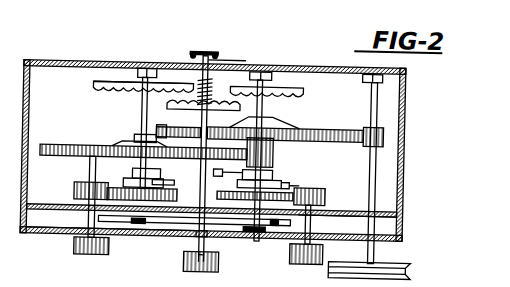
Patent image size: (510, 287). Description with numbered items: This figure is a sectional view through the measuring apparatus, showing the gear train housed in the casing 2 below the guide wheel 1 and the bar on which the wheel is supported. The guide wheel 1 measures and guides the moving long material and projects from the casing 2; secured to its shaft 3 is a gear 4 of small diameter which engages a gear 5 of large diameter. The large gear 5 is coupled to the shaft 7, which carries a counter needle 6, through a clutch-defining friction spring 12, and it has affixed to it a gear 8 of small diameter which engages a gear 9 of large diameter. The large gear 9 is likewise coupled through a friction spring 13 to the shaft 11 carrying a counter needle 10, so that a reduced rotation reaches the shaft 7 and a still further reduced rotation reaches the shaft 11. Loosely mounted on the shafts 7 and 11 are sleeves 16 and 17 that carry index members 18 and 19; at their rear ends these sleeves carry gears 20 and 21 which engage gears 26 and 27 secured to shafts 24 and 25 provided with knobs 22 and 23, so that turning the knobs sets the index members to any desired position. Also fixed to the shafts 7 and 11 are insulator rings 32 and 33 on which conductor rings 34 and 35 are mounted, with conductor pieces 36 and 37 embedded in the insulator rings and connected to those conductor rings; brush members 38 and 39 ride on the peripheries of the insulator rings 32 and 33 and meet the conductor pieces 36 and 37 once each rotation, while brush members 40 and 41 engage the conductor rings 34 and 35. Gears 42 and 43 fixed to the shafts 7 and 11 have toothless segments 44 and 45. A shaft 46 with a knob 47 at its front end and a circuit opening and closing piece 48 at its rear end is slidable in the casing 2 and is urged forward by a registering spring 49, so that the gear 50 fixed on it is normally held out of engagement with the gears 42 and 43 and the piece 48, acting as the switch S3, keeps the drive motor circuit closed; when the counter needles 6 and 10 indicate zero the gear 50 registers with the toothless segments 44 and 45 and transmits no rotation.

The guide wheel 1 is at (413, 267).
The casing 2 is at (404, 232).
The shaft 3 is at (376, 185).
The gear 4 is at (364, 125).
The gear 5 is at (318, 128).
The counter needle 6 is at (306, 236).
The shaft 7 is at (276, 122).
The gear 8 is at (246, 148).
The gear 9 is at (74, 148).
The counter needle 10 is at (200, 240).
The shaft 11 is at (141, 112).
The friction spring 12 is at (297, 95).
The friction spring 13 is at (120, 142).
The sleeve 16 is at (205, 232).
The sleeve 17 is at (180, 208).
The index member 18 is at (277, 213).
The index member 19 is at (136, 226).
The gear 20 is at (220, 213).
The gear 21 is at (122, 213).
The knob 22 is at (306, 262).
The knob 23 is at (77, 250).
The shaft 24 is at (320, 221).
The shaft 25 is at (90, 221).
The gear 26 is at (326, 194).
The gear 27 is at (74, 193).
The insulator ring 32 is at (287, 183).
The insulator ring 33 is at (133, 178).
The conductor ring 34 is at (262, 172).
The conductor ring 35 is at (130, 150).
The conductor piece 36 is at (272, 181).
The conductor piece 37 is at (162, 184).
The brush member 38 is at (300, 186).
The brush member 39 is at (105, 181).
The brush member 40 is at (224, 182).
The brush member 41 is at (188, 128).
The gear 42 is at (288, 92).
The gear 43 is at (94, 86).
The toothless segment 44 is at (285, 86).
The toothless segment 45 is at (128, 86).
The shaft 46 is at (186, 262).
The knob 47 is at (204, 262).
The circuit opening and closing piece 48 is at (212, 56).
The registering spring 49 is at (212, 85).
The gear 50 is at (172, 70).
The switch S3 is at (198, 52).